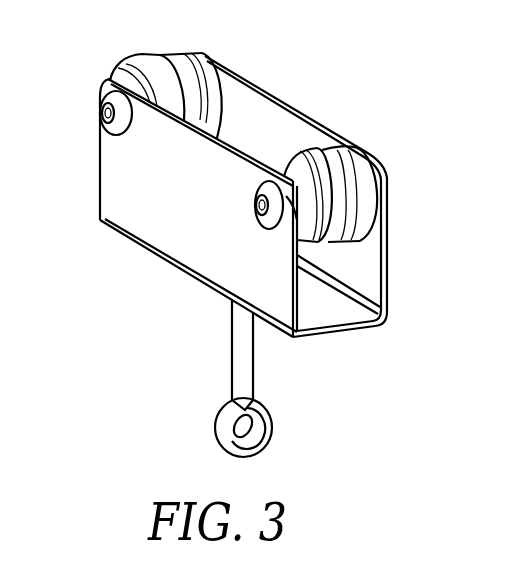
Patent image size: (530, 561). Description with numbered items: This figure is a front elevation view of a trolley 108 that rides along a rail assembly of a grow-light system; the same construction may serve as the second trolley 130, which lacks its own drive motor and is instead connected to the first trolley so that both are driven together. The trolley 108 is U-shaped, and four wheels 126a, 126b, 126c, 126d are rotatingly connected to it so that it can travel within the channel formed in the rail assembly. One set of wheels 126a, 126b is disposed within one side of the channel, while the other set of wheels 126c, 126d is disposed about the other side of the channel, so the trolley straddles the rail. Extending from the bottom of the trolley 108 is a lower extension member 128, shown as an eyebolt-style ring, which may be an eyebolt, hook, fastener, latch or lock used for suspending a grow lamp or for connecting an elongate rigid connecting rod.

The trolley 108 is at (294, 215).
The second trolley 130 is at (333, 337).
The wheel 126a is at (312, 233).
The wheel 126b is at (147, 64).
The wheel 126c is at (347, 157).
The wheel 126d is at (187, 56).
The lower extension member 128 is at (270, 424).